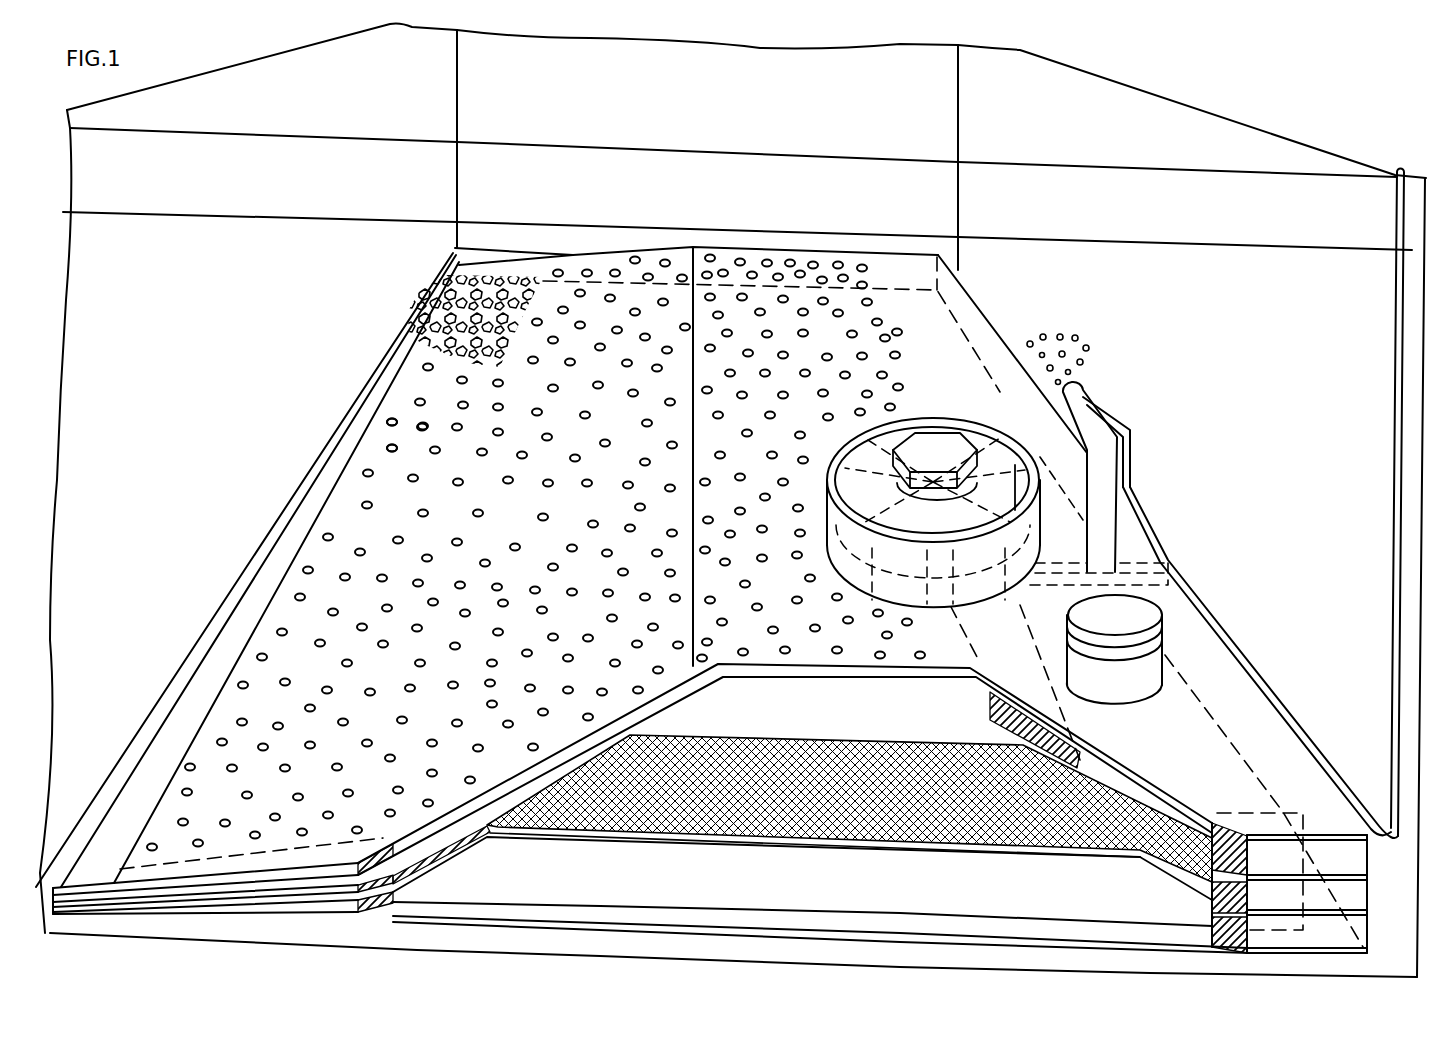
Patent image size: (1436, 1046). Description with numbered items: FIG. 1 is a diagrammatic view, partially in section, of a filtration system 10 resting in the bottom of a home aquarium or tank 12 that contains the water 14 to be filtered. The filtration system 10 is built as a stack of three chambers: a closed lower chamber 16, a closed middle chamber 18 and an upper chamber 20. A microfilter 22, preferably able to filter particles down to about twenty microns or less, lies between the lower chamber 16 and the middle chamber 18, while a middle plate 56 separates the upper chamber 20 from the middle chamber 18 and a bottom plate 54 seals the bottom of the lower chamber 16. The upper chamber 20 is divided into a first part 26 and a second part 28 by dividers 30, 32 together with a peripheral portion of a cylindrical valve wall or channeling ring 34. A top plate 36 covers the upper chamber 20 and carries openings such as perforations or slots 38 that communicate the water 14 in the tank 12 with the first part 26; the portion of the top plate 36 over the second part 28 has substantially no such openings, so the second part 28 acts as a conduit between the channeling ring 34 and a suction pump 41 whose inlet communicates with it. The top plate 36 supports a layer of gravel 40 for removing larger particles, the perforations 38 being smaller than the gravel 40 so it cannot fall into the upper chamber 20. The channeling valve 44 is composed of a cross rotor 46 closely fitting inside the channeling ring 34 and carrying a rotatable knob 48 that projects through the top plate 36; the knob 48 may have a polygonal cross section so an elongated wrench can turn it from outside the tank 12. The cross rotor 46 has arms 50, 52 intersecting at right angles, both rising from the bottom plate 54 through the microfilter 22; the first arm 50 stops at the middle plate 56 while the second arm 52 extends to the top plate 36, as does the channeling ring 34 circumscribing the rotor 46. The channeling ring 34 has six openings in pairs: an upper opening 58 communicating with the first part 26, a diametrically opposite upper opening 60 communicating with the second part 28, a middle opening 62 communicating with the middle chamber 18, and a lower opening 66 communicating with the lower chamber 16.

The filtration system 10 is at (1218, 681).
The tank 12 is at (1378, 157).
The water 14 is at (1300, 243).
The lower chamber 16 is at (723, 853).
The middle chamber 18 is at (863, 777).
The upper chamber 20 is at (893, 697).
The microfilter 22 is at (638, 800).
The first part of the upper chamber 26 is at (805, 670).
The second part of the upper chamber 28 is at (1148, 789).
The divider 30 is at (990, 650).
The divider 32 is at (1008, 393).
The channeling ring 34 is at (950, 415).
The top plate 36 is at (576, 518).
The perforations 38 is at (388, 446).
The gravel 40 is at (432, 292).
The suction pump 41 is at (1153, 625).
The channeling valve 44 is at (903, 432).
The cross rotor 46 is at (885, 500).
The rotatable knob 48 is at (1000, 535).
The first intersecting arm 50 is at (868, 448).
The second intersecting arm 52 is at (870, 500).
The bottom plate 54 is at (1030, 902).
The middle plate 56 is at (1340, 880).
The upper opening 58 is at (830, 473).
The upper opening 60 is at (1057, 491).
The middle opening 62 is at (1017, 590).
The lower opening 66 is at (915, 590).